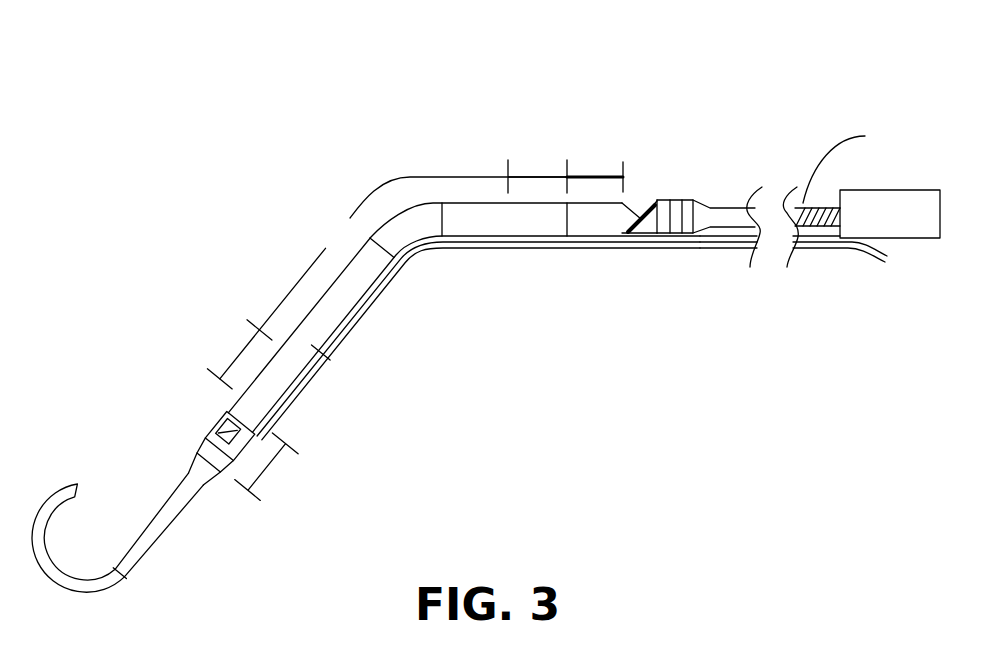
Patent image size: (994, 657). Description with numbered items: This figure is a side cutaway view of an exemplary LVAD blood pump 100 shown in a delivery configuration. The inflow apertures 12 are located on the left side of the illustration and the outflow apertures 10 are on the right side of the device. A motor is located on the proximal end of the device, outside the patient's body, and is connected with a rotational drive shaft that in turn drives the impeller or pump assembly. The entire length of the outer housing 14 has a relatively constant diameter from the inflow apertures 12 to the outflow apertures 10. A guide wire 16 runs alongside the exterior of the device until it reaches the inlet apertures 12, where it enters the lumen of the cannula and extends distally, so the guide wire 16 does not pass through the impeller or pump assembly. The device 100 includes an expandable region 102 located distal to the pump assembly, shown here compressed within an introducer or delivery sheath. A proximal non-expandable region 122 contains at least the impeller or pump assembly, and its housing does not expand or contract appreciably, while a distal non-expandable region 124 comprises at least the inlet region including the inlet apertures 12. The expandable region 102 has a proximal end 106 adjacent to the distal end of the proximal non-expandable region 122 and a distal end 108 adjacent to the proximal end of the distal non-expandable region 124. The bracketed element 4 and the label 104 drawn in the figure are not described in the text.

The LVAD blood pump 100 is at (769, 56).
The expandable region 102 is at (471, 110).
The outer sheath 104 is at (421, 278).
The proximal end of the expandable region 106 is at (522, 177).
The distal end of the expandable region 108 is at (231, 365).
The outflow apertures 10 is at (638, 199).
The inflow apertures 12 is at (227, 411).
The outer housing 14 is at (316, 349).
The guide wire 16 is at (717, 249).
The cutter assembly 4 is at (697, 255).
The proximal non-expandable region 122 is at (597, 177).
The distal non-expandable region 124 is at (264, 470).